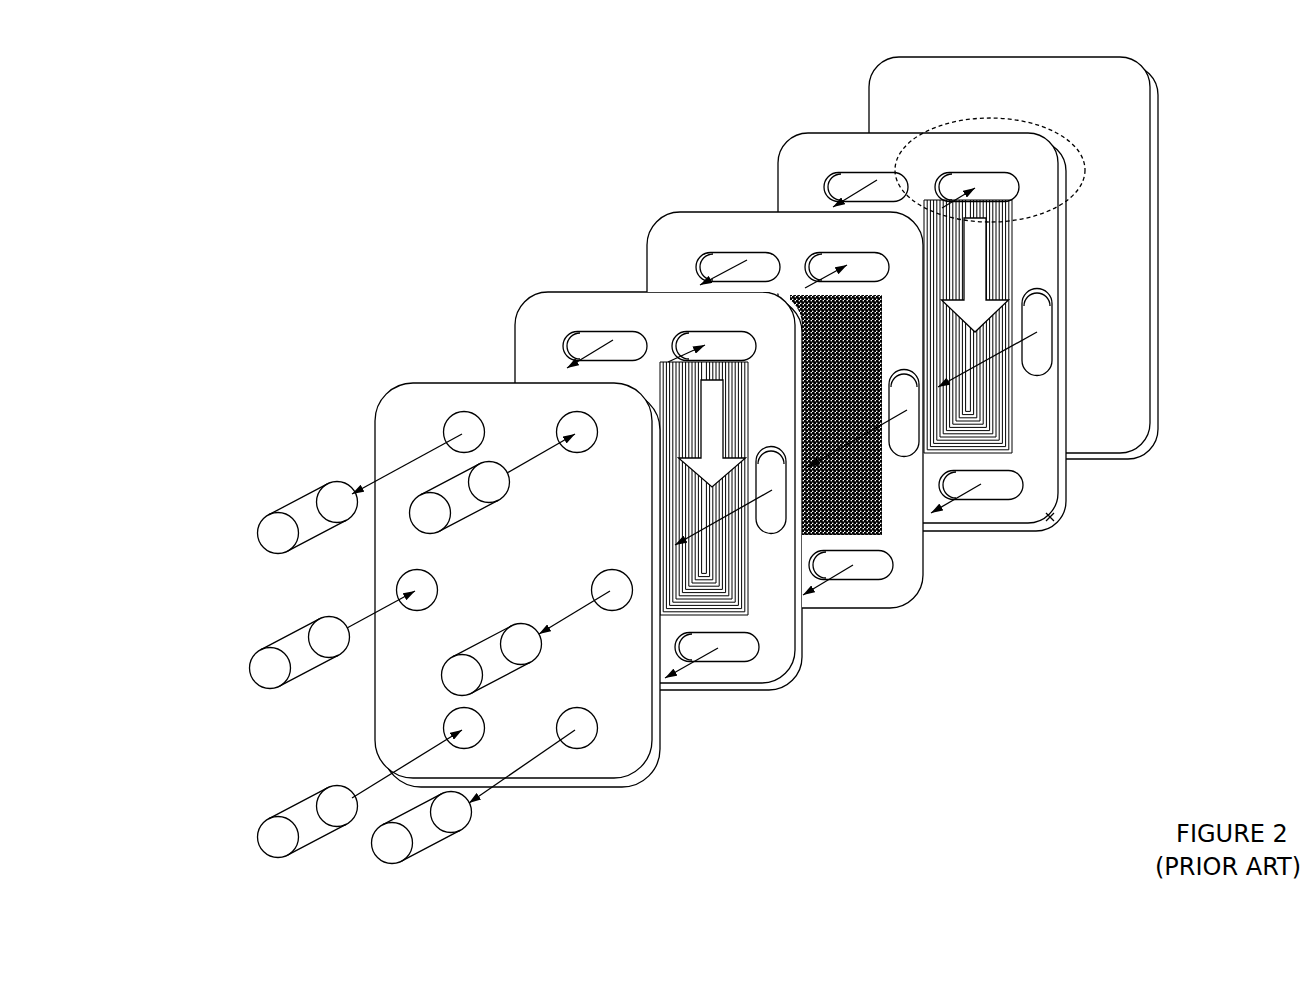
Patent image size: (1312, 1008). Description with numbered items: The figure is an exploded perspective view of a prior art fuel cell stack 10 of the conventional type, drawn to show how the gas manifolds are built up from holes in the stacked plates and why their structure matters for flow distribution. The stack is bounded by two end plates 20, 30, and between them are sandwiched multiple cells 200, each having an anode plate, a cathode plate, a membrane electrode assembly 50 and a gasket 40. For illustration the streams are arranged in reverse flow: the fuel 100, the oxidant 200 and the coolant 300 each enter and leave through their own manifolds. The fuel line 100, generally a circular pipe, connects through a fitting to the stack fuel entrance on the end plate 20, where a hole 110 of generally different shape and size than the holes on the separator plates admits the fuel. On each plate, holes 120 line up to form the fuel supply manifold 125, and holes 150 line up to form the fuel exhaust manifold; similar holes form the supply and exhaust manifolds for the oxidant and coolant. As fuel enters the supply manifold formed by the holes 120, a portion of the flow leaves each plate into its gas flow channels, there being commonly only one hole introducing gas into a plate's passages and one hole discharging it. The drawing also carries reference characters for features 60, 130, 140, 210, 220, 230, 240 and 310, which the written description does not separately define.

The fuel cell stack 10 is at (372, 228).
The end plate 20 is at (484, 593).
The end plate 30 is at (1163, 333).
The gasket 40 is at (930, 603).
The membrane electrode assembly 50 is at (802, 655).
The flow field 60 is at (723, 537).
The fuel line 100 is at (494, 506).
The hole 110 is at (555, 415).
The holes 120 is at (675, 330).
The manifold 125 is at (968, 127).
The rod 130 is at (298, 490).
The hole 140 is at (432, 430).
The holes 150 is at (555, 340).
The oxidant 200 is at (275, 810).
The hole 210 is at (435, 729).
The rod 220 is at (438, 850).
The hole 230 is at (578, 768).
The bottom slot 240 is at (698, 650).
The coolant 300 is at (280, 635).
The hole 310 is at (387, 585).